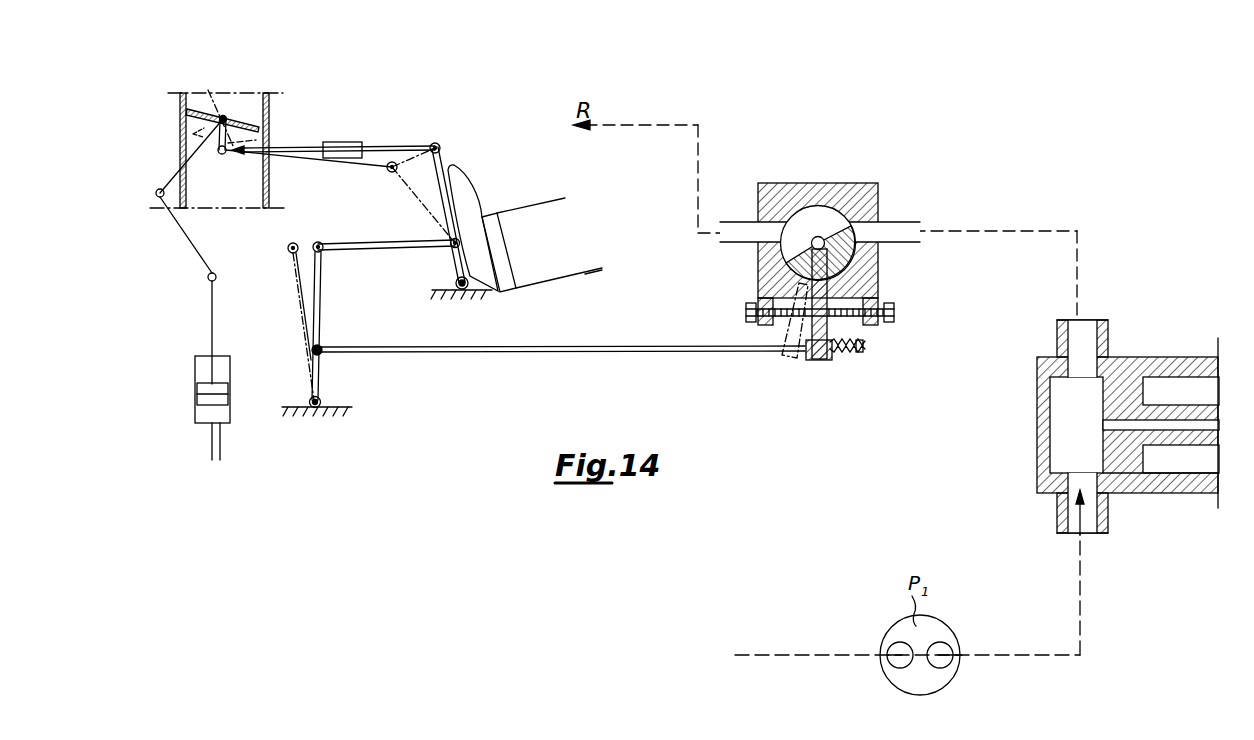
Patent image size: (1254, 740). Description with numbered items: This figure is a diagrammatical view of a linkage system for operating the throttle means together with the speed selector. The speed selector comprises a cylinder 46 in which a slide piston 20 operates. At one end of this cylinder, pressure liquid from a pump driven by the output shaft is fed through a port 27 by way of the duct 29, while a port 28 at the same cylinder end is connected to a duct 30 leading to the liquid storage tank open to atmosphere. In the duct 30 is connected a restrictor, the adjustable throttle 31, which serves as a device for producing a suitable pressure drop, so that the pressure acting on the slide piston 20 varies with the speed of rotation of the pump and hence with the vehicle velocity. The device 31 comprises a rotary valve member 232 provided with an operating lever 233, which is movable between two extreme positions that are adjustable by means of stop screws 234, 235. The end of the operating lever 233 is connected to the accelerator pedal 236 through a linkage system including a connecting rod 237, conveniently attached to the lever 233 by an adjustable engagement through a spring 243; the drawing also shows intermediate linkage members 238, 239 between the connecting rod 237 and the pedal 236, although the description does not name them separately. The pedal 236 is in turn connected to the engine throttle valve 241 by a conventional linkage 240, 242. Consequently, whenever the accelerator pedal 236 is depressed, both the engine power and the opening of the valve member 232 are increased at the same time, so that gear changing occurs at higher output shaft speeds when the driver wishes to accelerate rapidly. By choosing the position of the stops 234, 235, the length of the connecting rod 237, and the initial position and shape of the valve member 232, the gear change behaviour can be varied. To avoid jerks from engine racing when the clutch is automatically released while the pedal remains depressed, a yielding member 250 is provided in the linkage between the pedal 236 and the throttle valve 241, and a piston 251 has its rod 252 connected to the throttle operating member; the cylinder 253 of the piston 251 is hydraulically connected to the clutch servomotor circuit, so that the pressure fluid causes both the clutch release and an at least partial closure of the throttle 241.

The slide piston 20 is at (1128, 470).
The port 27 is at (1070, 514).
The port 28 is at (1106, 322).
The duct 29 is at (1083, 611).
The duct 30 is at (1031, 228).
The adjustable throttle 31 is at (818, 187).
The cylinder 46 is at (1184, 360).
The rotary valve member 232 is at (790, 262).
The operating lever 233 is at (820, 365).
The stop screw 234 is at (742, 314).
The stop screw 235 is at (896, 302).
The accelerator pedal 236 is at (445, 152).
The connecting rod 237 is at (572, 354).
The bell crank lever 238 is at (312, 302).
The link 239 is at (362, 244).
The conventional linkage 240 is at (388, 147).
The engine throttle valve 241 is at (248, 124).
The conventional linkage 242 is at (206, 149).
The spring 243 is at (862, 352).
The yielding member 250 is at (345, 142).
The piston 251 is at (205, 392).
The piston rod 252 is at (210, 310).
The cylinder 253 is at (227, 423).